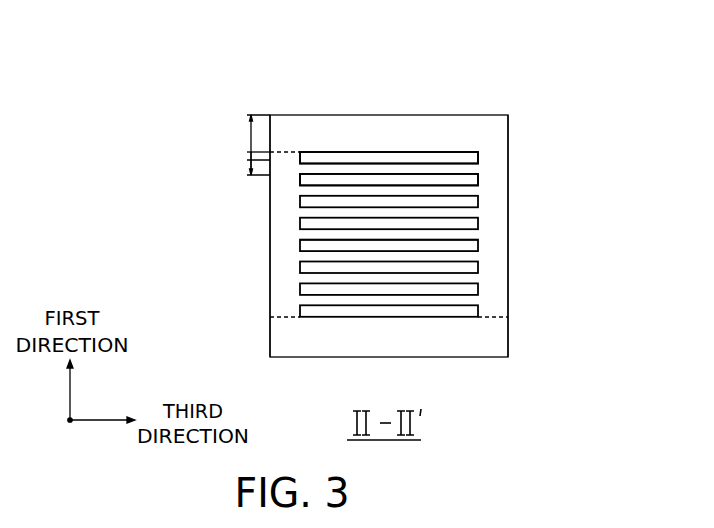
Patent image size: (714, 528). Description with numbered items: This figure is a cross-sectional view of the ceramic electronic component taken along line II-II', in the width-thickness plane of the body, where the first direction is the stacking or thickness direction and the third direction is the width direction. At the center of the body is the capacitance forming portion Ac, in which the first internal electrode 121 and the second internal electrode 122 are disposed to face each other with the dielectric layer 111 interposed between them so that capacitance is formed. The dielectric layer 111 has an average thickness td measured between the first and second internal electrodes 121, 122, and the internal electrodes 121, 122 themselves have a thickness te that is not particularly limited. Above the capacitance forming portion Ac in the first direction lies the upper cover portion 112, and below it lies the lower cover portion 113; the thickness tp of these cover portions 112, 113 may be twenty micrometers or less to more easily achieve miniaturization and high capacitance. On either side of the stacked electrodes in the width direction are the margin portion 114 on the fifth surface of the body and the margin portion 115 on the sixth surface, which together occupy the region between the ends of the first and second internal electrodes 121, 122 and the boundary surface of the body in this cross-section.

The dielectric layer 111 is at (478, 166).
The upper cover portion 112 is at (393, 130).
The lower cover portion 113 is at (500, 337).
The margin portion 114 is at (286, 271).
The margin portion 115 is at (500, 262).
The first internal electrode 121 is at (478, 152).
The second internal electrode 122 is at (478, 176).
The capacitance forming portion Ac is at (300, 237).
The thickness of the cover portions tp is at (262, 145).
The thickness of the internal electrodes te is at (247, 151).
The thickness of the dielectric layer td is at (247, 168).